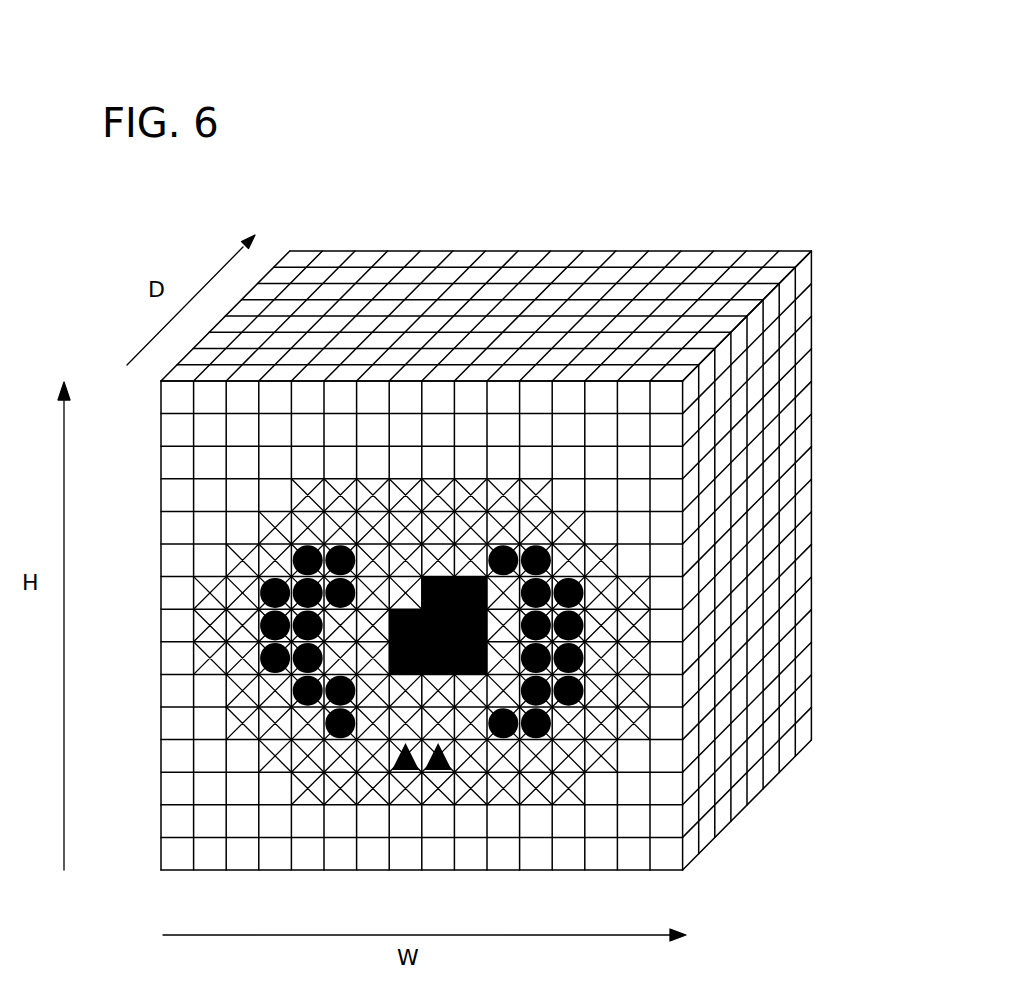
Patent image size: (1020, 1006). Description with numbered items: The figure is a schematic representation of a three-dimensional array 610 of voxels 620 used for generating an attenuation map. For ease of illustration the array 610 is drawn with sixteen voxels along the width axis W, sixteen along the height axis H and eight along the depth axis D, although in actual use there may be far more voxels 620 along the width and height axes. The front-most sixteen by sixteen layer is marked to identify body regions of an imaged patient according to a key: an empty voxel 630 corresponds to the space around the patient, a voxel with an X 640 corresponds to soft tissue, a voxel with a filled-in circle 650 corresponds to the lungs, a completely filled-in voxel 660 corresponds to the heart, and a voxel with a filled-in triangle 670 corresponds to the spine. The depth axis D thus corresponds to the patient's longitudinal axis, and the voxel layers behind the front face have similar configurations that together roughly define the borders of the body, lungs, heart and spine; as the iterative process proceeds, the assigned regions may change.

The three-dimensional array 610 is at (621, 206).
The voxels 620 is at (807, 730).
The empty voxel 630 is at (178, 853).
The voxel with an X 640 is at (568, 797).
The voxel with a filled-in circle 650 is at (257, 545).
The completely filled-in voxel 660 is at (472, 673).
The voxel with a filled-in triangle 670 is at (393, 758).